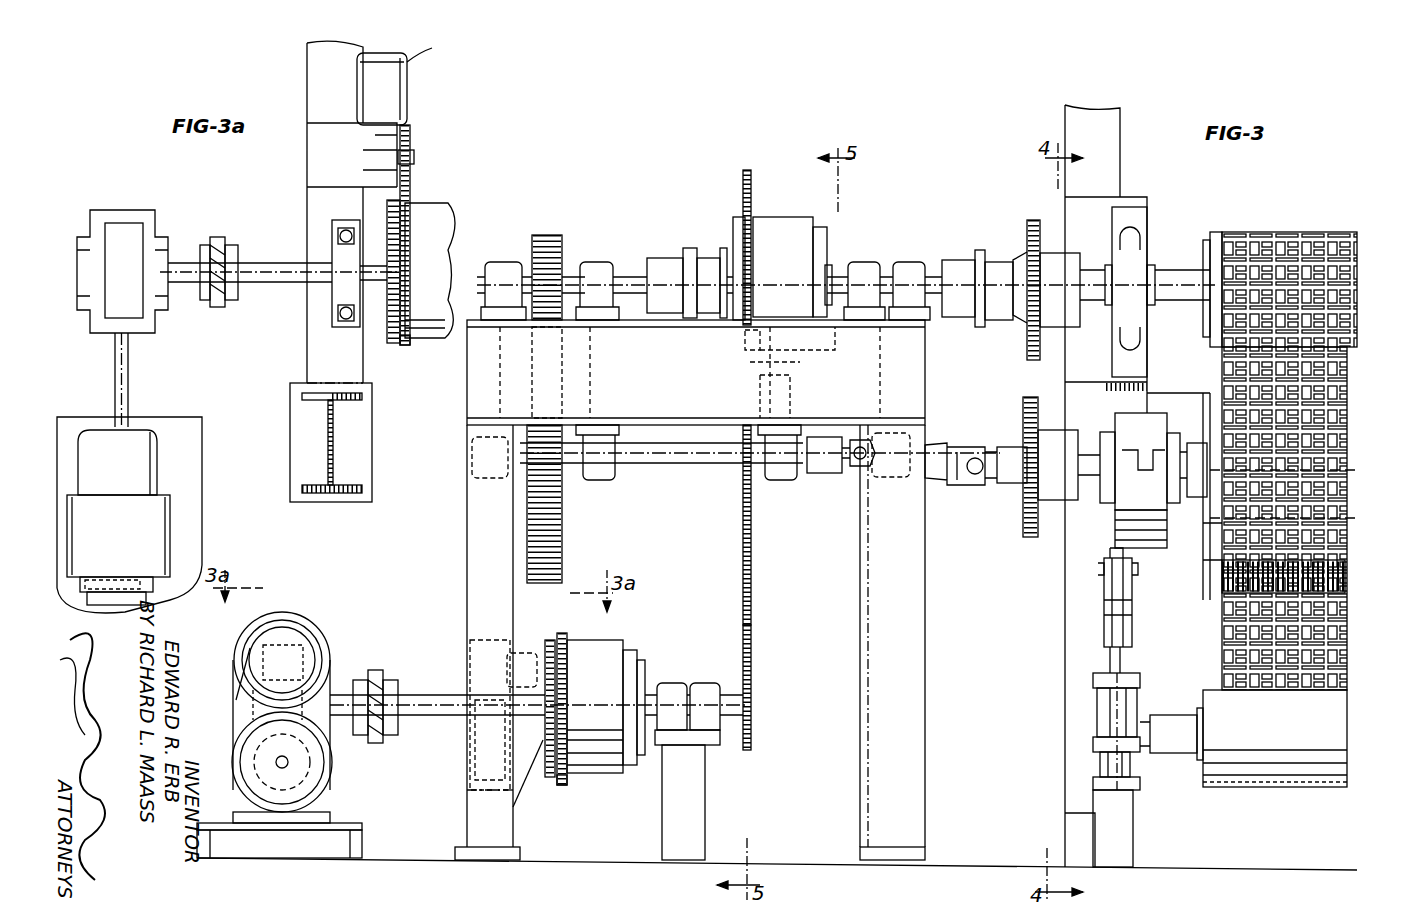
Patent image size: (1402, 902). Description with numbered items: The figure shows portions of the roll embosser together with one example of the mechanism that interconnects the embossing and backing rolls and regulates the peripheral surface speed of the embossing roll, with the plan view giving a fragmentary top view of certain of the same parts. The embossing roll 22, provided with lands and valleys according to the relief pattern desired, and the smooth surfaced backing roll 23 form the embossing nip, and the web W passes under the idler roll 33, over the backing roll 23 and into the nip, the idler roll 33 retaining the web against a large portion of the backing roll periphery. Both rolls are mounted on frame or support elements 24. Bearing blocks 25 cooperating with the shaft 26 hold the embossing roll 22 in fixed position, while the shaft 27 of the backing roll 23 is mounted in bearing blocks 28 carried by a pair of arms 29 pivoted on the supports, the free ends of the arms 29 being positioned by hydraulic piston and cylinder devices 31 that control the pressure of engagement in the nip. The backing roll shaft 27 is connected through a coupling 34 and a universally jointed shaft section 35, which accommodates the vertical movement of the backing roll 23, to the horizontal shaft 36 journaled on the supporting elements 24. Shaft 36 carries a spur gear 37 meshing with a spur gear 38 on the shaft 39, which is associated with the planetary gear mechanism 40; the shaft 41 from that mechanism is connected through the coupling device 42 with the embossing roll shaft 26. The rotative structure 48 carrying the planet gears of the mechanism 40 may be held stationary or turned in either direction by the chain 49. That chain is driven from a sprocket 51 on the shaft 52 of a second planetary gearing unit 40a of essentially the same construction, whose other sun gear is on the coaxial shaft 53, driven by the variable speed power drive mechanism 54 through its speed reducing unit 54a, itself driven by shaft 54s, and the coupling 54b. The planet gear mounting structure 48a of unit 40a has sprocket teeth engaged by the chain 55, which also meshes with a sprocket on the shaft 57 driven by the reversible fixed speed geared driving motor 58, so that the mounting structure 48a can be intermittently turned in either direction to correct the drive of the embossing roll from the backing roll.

In FIG. 3, the embossing roll 22 is at (1213, 232).
In FIG. 3, the backing roll 23 is at (1213, 578).
In FIG. 3, the support elements 24 is at (470, 550).
In FIG. 3, the bearing blocks 25 is at (1133, 263).
In FIG. 3, the shaft of the embossing roll 26 is at (1195, 263).
In FIG. 3, the shaft of the backing roll 27 is at (1190, 490).
In FIG. 3, the bearing blocks 28 is at (1133, 423).
In FIG. 3, the arms 29 is at (1120, 562).
In FIG. 3, the hydraulic piston and cylinder devices 31 is at (1107, 700).
In FIG. 3, the idler roll 33 is at (1210, 363).
In FIG. 3, the coupling 34 is at (1020, 513).
In FIG. 3, the universally jointed shaft section 35 is at (938, 447).
In FIG. 3, the shaft 36 is at (710, 455).
In FIG. 3, the spur gear 37 is at (563, 567).
In FIG. 3, the spur gear 38 is at (547, 237).
In FIG. 3, the shaft 39 is at (632, 280).
In FIG. 3, the planetary gear mechanism 40 is at (788, 217).
In FIG. 3A, the planetary gearing unit 40a is at (432, 230).
In FIG. 3, the planetary gearing unit 40a is at (593, 635).
In FIG. 3, the shaft 41 is at (940, 280).
In FIG. 3, the coupling device 42 is at (1025, 333).
In FIG. 3, the rotative structure 48 is at (747, 193).
In FIG. 3A, the mounting structure 48a is at (400, 203).
In FIG. 3, the mounting structure 48a is at (560, 633).
In FIG. 3, the chain 49 is at (750, 560).
In FIG. 3, the sprocket 51 is at (747, 740).
In FIG. 3, the shaft 52 is at (652, 693).
In FIG. 3A, the shaft 53 is at (292, 273).
In FIG. 3, the shaft 53 is at (450, 712).
In FIG. 3A, the variable speed power drive mechanism 54 is at (140, 543).
In FIG. 3, the variable speed power drive mechanism 54 is at (233, 660).
In FIG. 3A, the speed reducing unit 54a is at (127, 250).
In FIG. 3, the speed reducing unit 54a is at (282, 640).
In FIG. 3A, the coupling 54b is at (248, 212).
In FIG. 3, the coupling 54b is at (413, 652).
In FIG. 3A, the shaft 54s is at (128, 365).
In FIG. 3A, the chain 55 is at (405, 347).
In FIG. 3, the chain 55 is at (567, 778).
In FIG. 3A, the shaft 57 is at (413, 157).
In FIG. 3A, the fixed speed geared driving motor 58 is at (387, 92).
In FIG. 3, the fixed speed geared driving motor 58 is at (525, 653).
In FIG. 3, the web W is at (1222, 647).